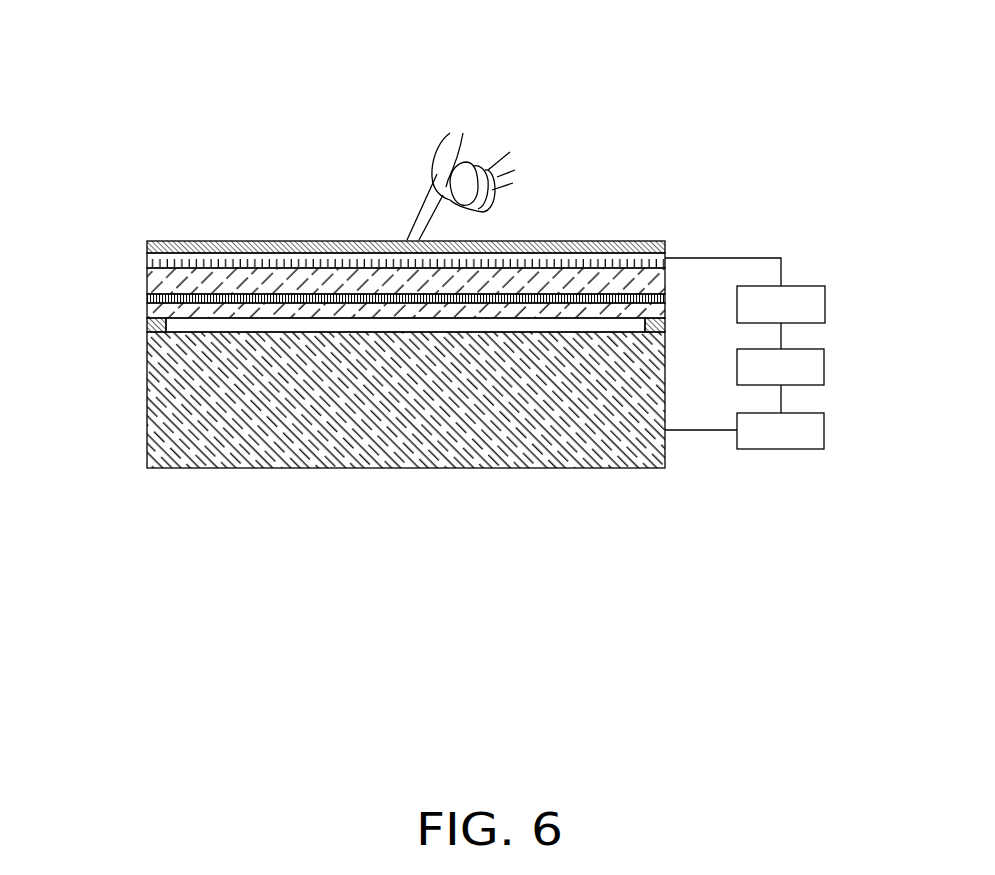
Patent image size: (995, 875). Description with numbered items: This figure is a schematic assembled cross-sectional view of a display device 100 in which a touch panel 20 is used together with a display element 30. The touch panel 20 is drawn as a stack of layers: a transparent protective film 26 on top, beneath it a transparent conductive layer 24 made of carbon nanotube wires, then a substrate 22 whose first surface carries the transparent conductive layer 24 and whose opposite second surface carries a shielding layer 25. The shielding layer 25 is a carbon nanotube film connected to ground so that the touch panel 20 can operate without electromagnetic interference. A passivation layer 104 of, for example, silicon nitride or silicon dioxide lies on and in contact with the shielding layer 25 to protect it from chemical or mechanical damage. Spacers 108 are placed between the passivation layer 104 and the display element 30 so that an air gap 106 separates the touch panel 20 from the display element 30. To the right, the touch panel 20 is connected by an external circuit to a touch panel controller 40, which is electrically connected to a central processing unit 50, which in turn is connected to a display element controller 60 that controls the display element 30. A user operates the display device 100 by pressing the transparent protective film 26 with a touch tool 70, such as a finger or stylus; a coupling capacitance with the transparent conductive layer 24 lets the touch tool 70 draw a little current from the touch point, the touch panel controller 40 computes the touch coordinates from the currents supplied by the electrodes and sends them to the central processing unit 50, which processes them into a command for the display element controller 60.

The display device 100 is at (468, 37).
The touch panel 20 is at (70, 227).
The transparent protective film 26 is at (147, 247).
The transparent conductive layer 24 is at (147, 260).
The substrate 22 is at (147, 282).
The shielding layer 25 is at (147, 299).
The passivation layer 104 is at (147, 314).
The air gap 106 is at (650, 320).
The spacers 108 is at (147, 326).
The display element 30 is at (167, 397).
The touch panel controller 40 is at (825, 302).
The central processing unit 50 is at (824, 365).
The display element controller 60 is at (824, 430).
The touch tool 70 is at (440, 162).